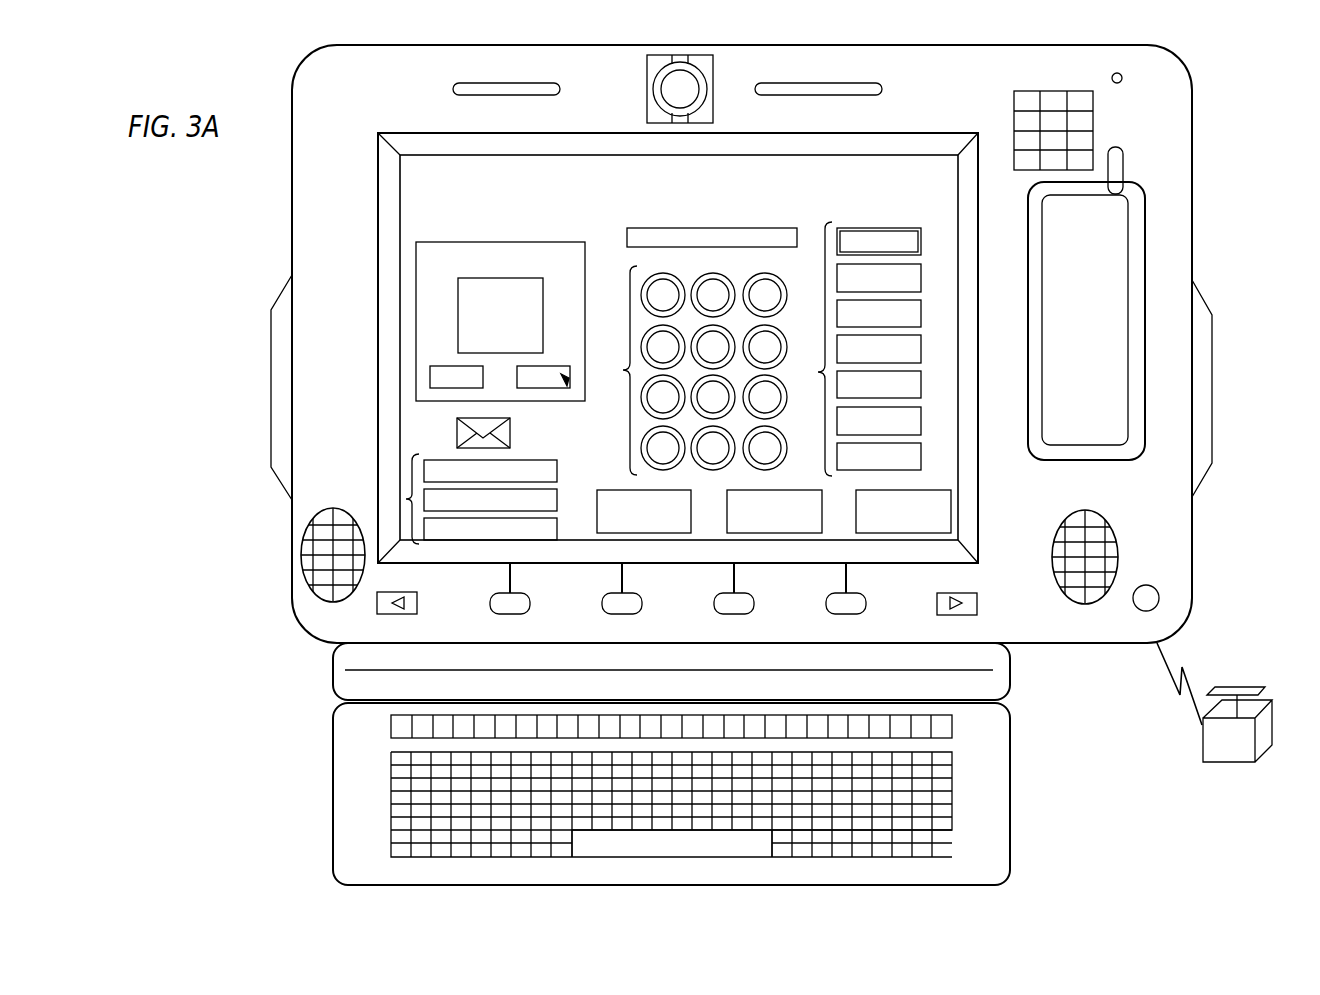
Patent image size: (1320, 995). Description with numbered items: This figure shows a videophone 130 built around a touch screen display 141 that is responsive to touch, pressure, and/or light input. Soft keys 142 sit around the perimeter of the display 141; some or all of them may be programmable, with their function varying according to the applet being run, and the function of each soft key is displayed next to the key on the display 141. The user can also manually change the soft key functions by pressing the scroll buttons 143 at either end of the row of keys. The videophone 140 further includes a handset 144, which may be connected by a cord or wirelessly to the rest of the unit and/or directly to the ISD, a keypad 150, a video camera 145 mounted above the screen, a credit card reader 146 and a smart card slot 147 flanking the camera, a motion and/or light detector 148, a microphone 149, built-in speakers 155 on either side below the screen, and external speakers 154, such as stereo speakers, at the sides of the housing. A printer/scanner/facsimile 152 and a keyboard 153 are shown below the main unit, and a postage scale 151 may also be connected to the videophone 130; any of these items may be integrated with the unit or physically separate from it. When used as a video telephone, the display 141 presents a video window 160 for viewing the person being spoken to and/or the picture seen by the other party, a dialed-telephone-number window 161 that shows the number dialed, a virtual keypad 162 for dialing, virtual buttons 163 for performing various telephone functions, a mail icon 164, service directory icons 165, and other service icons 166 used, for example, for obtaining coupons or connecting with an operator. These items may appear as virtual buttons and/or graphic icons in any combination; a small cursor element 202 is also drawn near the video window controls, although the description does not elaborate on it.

The videophone 130 is at (1208, 63).
The videophone 140 is at (1194, 120).
The touch screen display 141 is at (380, 272).
The soft keys 142 is at (532, 603).
The scroll buttons 143 is at (419, 603).
The handset 144 is at (1095, 319).
The video camera 145 is at (647, 68).
The credit card reader 146 is at (487, 95).
The smart card slot 147 is at (878, 95).
The motion and/or light detector 148 is at (1123, 82).
The microphone 149 is at (1146, 584).
The keypad 150 is at (1024, 90).
The postage scale 151 is at (1203, 750).
The printer/scanner/facsimile 152 is at (1012, 668).
The keyboard 153 is at (1012, 788).
The external speakers 154 is at (272, 398).
The built-in speaker 155 is at (306, 576).
The video window 160 is at (562, 252).
The dialed-telephone-number window 161 is at (722, 246).
The virtual keypad 162 is at (690, 370).
The virtual buttons 163 is at (854, 349).
The mail icon 164 is at (512, 436).
The service directory icons 165 is at (406, 499).
The service icons 166 is at (614, 489).
The cursor 202 is at (567, 383).